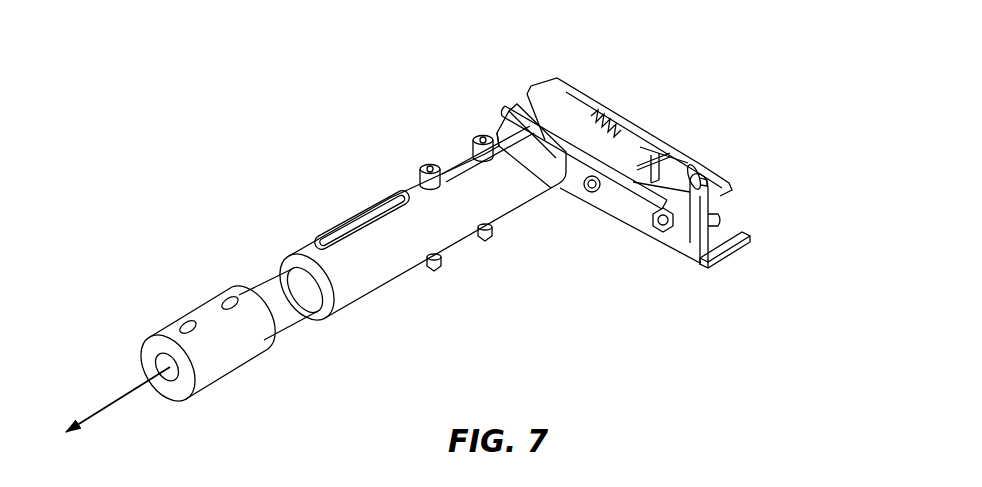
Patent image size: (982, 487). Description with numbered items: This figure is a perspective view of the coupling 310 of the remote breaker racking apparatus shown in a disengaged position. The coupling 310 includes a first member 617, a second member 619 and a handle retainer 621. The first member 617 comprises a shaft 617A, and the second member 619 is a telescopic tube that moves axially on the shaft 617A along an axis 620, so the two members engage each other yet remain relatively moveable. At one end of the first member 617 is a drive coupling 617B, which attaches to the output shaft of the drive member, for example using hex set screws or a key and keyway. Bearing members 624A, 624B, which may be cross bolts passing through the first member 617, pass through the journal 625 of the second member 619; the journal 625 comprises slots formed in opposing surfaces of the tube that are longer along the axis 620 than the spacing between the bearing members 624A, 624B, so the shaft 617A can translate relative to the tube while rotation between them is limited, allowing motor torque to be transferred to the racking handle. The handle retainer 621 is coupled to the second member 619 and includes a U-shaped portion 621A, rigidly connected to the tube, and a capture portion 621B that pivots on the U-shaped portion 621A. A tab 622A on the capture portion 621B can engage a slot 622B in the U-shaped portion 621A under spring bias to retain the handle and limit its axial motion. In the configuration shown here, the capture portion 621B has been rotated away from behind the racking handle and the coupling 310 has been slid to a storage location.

The coupling 310 is at (365, 207).
The first member 617 is at (256, 288).
The shaft 617A is at (277, 303).
The drive coupling 617B is at (225, 357).
The second member 619 is at (465, 244).
The axis 620 is at (118, 400).
The handle retainer 621 is at (615, 214).
The U-shaped portion 621A is at (673, 247).
The capture portion 621B is at (610, 158).
The tab 622A is at (587, 170).
The slot 622B is at (715, 223).
The bearing member 624A is at (429, 163).
The bearing member 624B is at (478, 134).
The journal 625 is at (383, 207).